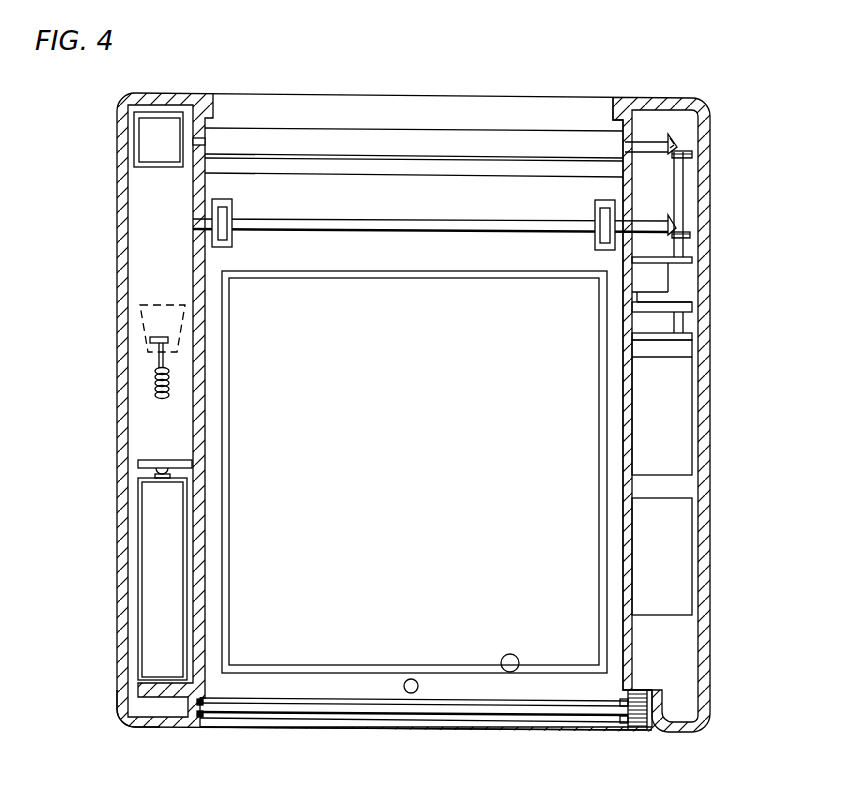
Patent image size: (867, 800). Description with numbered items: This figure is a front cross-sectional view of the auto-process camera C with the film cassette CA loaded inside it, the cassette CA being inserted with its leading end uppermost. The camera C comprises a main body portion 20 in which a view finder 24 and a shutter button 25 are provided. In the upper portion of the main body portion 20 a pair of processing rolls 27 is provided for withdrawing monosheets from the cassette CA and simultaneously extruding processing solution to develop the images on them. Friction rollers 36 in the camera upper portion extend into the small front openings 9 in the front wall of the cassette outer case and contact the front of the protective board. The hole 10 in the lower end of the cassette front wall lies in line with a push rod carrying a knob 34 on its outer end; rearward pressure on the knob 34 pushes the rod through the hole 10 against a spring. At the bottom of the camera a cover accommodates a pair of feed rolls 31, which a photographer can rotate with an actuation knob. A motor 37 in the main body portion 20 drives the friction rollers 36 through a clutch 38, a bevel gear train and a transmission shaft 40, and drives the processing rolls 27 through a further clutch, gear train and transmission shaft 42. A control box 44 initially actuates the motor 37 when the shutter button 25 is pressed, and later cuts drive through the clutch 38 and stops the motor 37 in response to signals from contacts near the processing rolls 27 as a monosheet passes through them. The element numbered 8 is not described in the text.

The platen glass 8 is at (511, 672).
The small front openings 9 is at (232, 240).
The hole 10 is at (413, 693).
The main body portion 20 is at (712, 418).
The view finder 24 is at (157, 132).
The shutter button 25 is at (147, 318).
The processing rolls 27 is at (578, 140).
The feed rolls 31 is at (603, 713).
The knob 34 is at (640, 718).
The friction rollers 36 is at (221, 207).
The motor 37 is at (682, 376).
The clutch 38 is at (688, 233).
The transmission shaft 40 is at (646, 222).
The transmission shaft 42 is at (650, 142).
The control box 44 is at (677, 576).
The auto-process camera C is at (122, 729).
The cassette CA is at (255, 686).